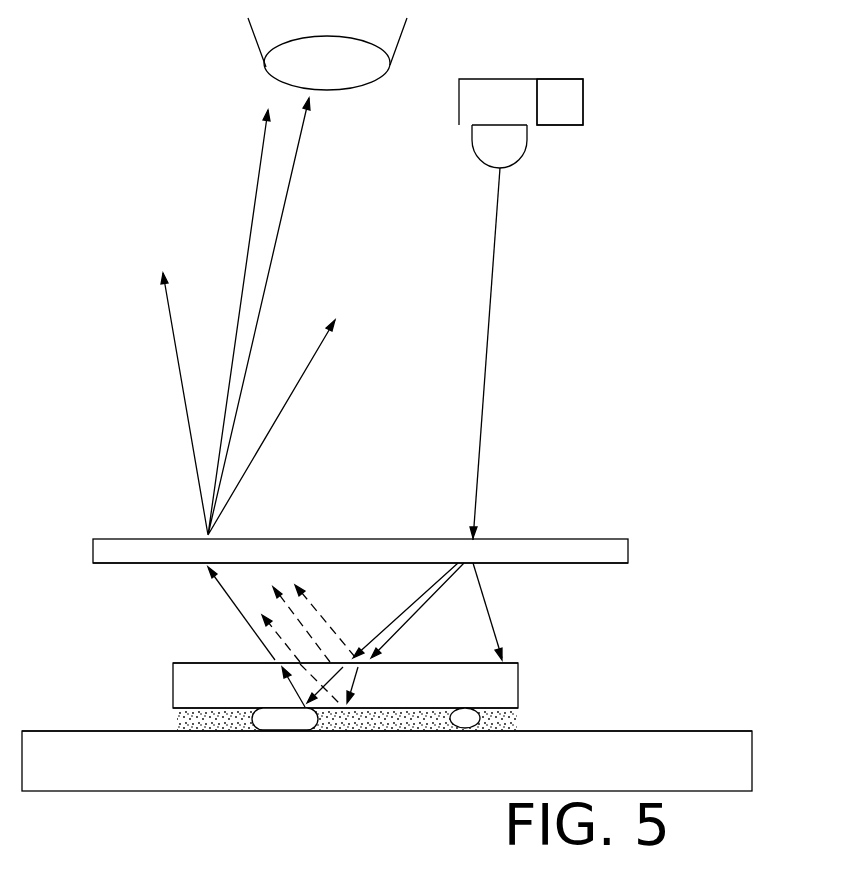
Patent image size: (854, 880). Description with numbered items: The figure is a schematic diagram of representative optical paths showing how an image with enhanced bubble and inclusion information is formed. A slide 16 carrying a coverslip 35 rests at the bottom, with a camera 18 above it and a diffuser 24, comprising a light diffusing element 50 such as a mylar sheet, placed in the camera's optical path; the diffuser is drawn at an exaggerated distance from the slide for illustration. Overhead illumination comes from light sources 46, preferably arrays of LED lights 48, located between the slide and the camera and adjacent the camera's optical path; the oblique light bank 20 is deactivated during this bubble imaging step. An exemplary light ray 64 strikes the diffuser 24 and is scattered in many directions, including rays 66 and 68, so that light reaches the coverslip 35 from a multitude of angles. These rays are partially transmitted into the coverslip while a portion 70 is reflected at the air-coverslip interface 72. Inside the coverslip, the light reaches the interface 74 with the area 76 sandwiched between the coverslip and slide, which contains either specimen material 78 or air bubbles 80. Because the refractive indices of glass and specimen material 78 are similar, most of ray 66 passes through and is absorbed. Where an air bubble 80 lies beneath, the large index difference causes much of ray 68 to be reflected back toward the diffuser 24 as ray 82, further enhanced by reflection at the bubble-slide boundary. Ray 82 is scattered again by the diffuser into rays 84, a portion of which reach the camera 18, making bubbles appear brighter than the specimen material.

The slide 16 is at (698, 770).
The camera 18 is at (388, 30).
The oblique light bank 20 is at (597, 73).
The diffuser 24 is at (638, 546).
The coverslip 35 is at (502, 683).
The light sources 46 is at (572, 110).
The LED lights 48 is at (500, 150).
The light diffusing element 50 is at (607, 553).
The light ray 64 is at (496, 353).
The ray 66 is at (417, 615).
The ray 68 is at (420, 595).
The reflected portion 70 is at (323, 603).
The air-coverslip interface 72 is at (170, 664).
The interface 74 is at (170, 707).
The area 76 is at (203, 730).
The specimen material 78 is at (397, 732).
The air bubbles 80 is at (282, 726).
The ray 82 is at (240, 618).
The rays 84 is at (180, 384).